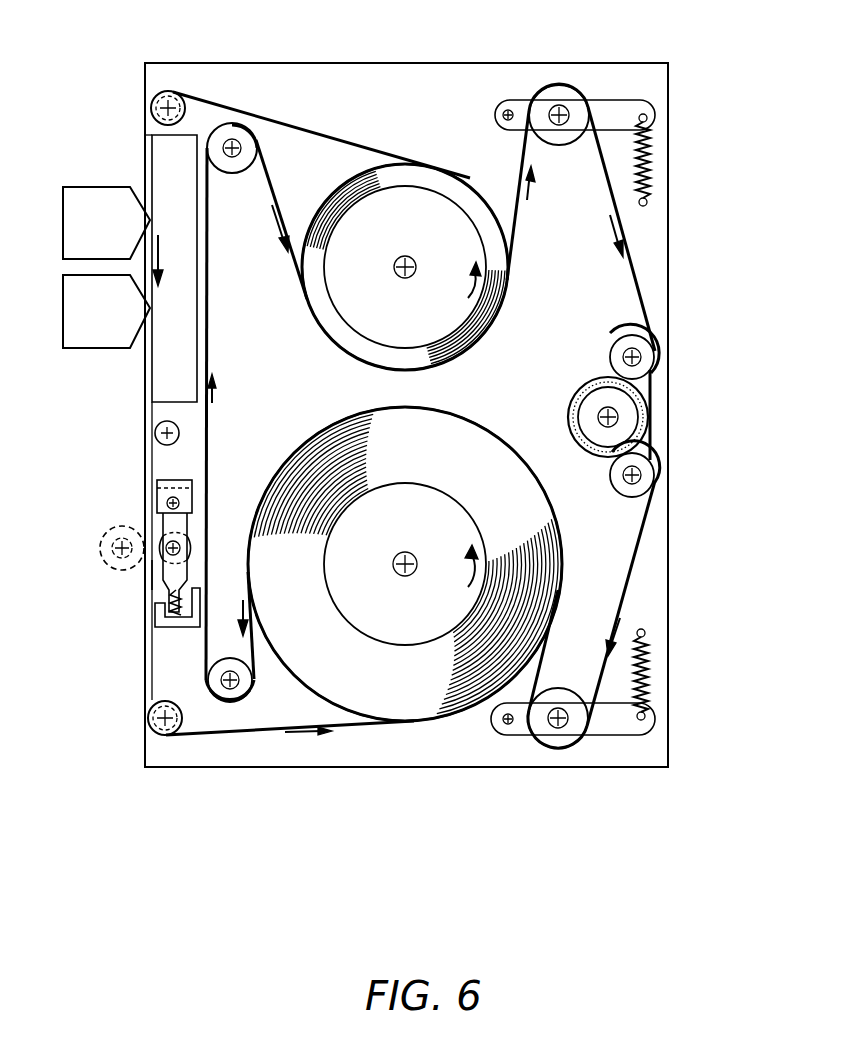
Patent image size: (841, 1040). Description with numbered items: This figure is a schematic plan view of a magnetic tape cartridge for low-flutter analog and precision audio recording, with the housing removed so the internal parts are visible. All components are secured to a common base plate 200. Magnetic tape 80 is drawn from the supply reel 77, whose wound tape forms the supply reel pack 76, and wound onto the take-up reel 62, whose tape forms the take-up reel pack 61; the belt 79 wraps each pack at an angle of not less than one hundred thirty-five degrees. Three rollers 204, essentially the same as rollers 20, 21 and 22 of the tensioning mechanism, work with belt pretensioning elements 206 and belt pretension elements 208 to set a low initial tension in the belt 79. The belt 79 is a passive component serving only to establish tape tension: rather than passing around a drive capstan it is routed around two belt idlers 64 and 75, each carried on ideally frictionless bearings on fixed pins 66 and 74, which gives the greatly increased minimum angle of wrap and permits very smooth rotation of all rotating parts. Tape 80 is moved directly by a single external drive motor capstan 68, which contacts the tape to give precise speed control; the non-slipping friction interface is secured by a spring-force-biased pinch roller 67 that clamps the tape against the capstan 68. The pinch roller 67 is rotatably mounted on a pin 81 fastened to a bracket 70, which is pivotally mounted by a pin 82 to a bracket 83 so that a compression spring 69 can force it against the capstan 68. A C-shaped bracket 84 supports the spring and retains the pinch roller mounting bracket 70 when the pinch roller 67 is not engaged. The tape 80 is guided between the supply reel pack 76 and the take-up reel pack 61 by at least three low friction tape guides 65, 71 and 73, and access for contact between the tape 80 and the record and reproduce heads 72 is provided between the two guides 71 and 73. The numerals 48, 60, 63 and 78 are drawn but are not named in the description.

The roller 20 is at (655, 352).
The roller 21 is at (632, 422).
The roller 22 is at (655, 474).
The roller covering 48 is at (640, 395).
The web 60 is at (607, 283).
The take-up reel pack 61 is at (405, 612).
The take-up reel 62 is at (427, 620).
The lower roll shaft 63 is at (399, 577).
The belt idler 64 is at (237, 695).
The tape guide 65 is at (158, 733).
The fixed pin 66 is at (220, 682).
The pinch roller 67 is at (152, 574).
The external drive motor capstan 68 is at (104, 562).
The compression spring 69 is at (184, 600).
The bracket 70 is at (158, 530).
The tape guide 71 is at (156, 435).
The record and reproduce heads 72 is at (68, 238).
The tape guide 73 is at (174, 92).
The fixed pin 74 is at (236, 140).
The belt idler 75 is at (271, 96).
The supply reel pack 76 is at (405, 189).
The supply reel 77 is at (383, 207).
The upper roll shaft 78 is at (408, 252).
The belt 79 is at (287, 248).
The magnetic tape 80 is at (203, 133).
The pin 81 is at (178, 546).
The pin 82 is at (178, 503).
The bracket 83 is at (178, 480).
The C-shaped bracket 84 is at (178, 628).
The common base plate 200 is at (600, 748).
The rollers 204 is at (667, 411).
The belt pretensioning elements 206 is at (548, 752).
The belt pretension elements 208 is at (596, 80).